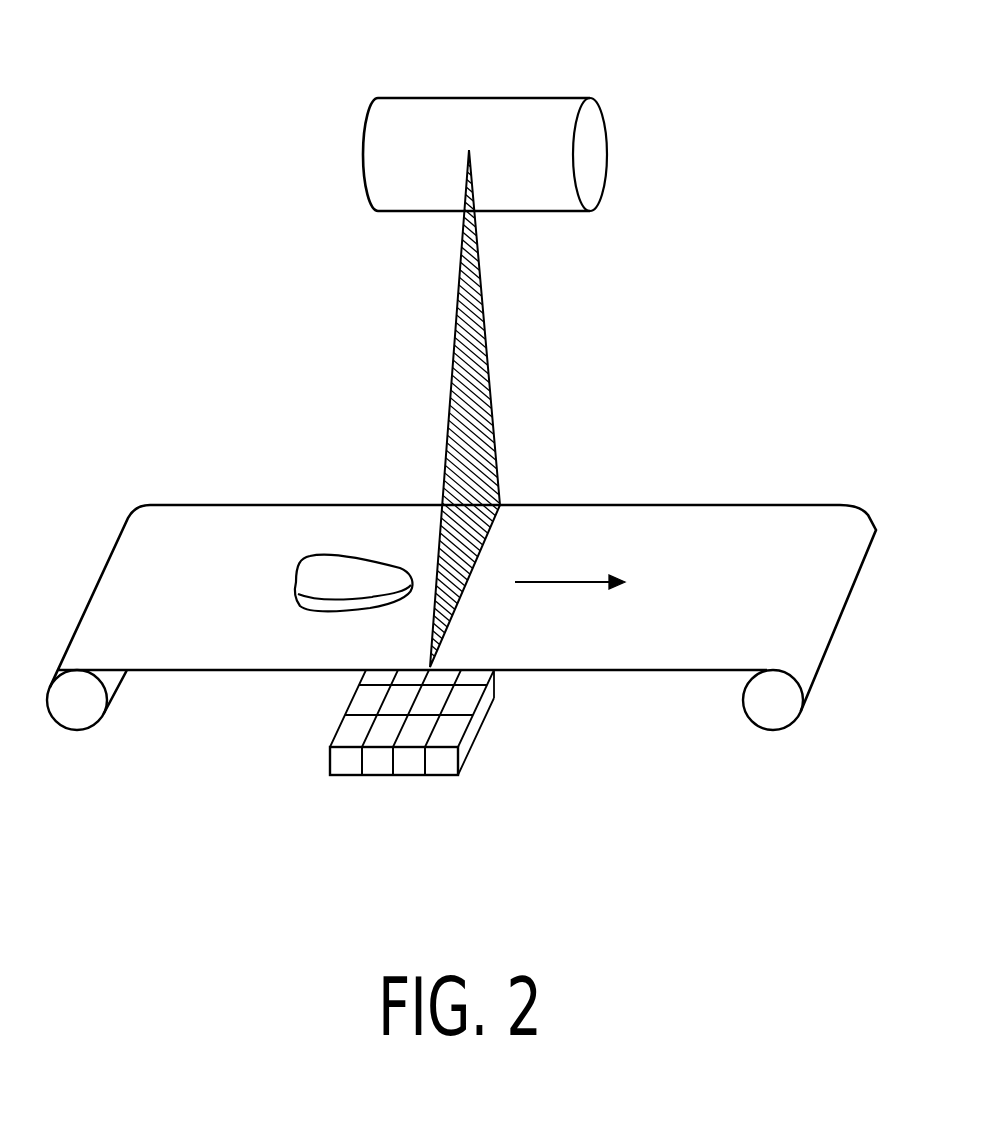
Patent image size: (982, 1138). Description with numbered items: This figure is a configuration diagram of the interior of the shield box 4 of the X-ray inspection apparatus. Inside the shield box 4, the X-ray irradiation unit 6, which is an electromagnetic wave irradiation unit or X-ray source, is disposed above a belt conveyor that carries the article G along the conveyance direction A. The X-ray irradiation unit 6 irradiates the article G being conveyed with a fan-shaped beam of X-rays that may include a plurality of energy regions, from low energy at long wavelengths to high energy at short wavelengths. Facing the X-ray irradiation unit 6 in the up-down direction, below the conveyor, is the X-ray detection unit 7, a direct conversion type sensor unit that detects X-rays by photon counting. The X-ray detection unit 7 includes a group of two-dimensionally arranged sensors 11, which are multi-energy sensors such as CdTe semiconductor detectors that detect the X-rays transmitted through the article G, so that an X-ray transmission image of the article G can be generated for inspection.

The X-ray irradiation unit 6 is at (540, 112).
The shield box 4 is at (197, 527).
The article G is at (364, 577).
The conveyance direction A is at (568, 580).
The sensor 11 is at (340, 762).
The X-ray detection unit 7 is at (376, 785).